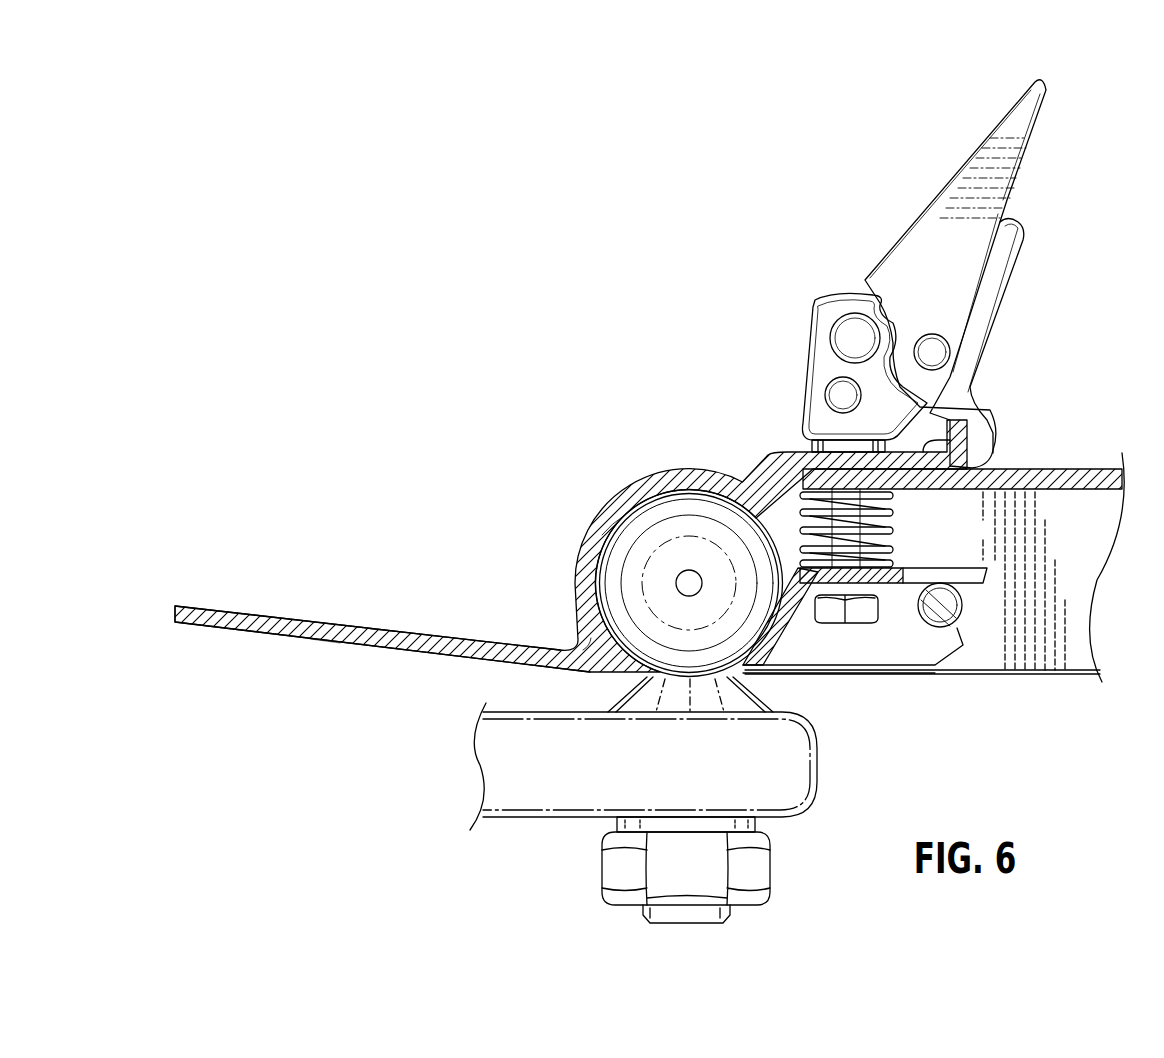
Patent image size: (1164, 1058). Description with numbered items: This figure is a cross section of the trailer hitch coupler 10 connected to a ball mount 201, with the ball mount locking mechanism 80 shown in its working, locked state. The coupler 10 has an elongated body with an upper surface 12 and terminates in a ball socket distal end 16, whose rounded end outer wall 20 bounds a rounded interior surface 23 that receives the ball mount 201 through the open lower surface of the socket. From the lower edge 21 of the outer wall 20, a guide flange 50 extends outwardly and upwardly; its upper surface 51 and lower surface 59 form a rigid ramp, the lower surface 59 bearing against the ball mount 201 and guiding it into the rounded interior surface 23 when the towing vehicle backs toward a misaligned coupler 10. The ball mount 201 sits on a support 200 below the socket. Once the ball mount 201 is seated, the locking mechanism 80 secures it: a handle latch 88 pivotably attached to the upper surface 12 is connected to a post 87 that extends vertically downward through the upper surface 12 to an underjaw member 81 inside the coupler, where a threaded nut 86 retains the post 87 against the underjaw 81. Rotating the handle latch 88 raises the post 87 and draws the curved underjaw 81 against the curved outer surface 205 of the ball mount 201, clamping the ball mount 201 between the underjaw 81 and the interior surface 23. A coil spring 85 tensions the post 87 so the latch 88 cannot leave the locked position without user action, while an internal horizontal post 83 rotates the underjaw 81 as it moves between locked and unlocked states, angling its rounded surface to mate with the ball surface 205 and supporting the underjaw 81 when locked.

The trailer hitch coupler 10 is at (1085, 447).
The upper surface 12 is at (1028, 482).
The ball socket distal end 16 is at (488, 470).
The rounded end outer wall 20 is at (612, 503).
The lower edge 21 is at (581, 650).
The rounded interior surface 23 is at (600, 533).
The guide flange 50 is at (303, 620).
The upper surface 51 is at (388, 631).
The lower surface 59 is at (323, 640).
The ball mount locking mechanism 80 is at (807, 210).
The underjaw member 81 is at (780, 653).
The internal horizontal post 83 is at (963, 610).
The coil spring 85 is at (887, 527).
The threaded nut 86 is at (870, 627).
The post 87 is at (813, 450).
The handle latch 88 is at (963, 177).
The rail 200 is at (822, 761).
The ball mount 201 is at (690, 531).
The curved outer surface 205 is at (752, 528).